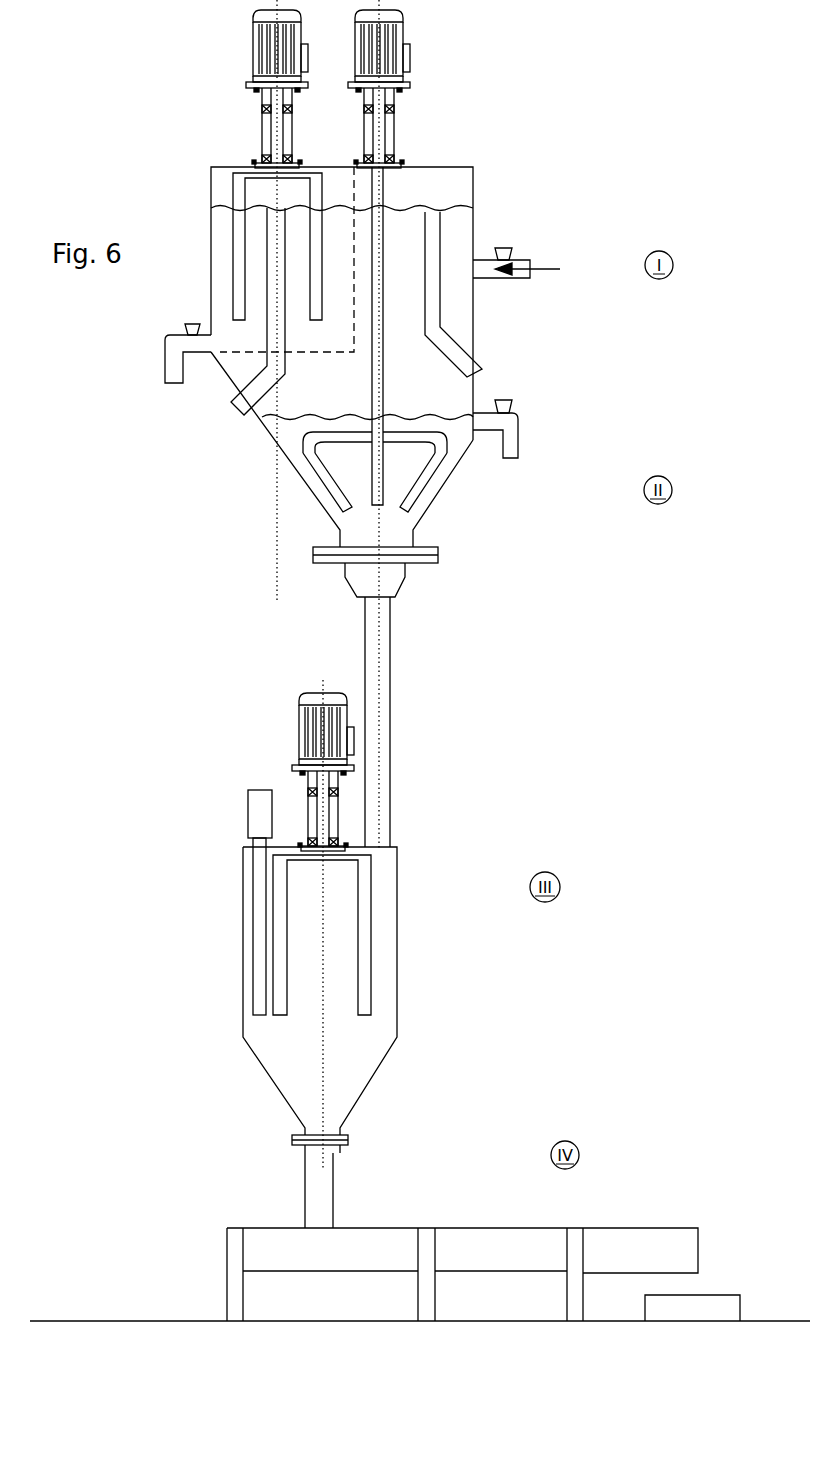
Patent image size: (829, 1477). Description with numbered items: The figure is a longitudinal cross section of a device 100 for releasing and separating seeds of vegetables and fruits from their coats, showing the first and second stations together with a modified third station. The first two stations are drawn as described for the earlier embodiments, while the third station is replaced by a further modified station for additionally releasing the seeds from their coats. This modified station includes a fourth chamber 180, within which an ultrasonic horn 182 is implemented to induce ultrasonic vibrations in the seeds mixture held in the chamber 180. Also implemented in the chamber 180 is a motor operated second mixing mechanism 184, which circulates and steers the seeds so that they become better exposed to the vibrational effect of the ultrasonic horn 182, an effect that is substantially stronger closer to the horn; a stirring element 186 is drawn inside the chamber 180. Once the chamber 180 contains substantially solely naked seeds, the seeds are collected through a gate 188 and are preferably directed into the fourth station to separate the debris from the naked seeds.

The device 100 is at (610, 186).
The fourth chamber 180 is at (388, 958).
The ultrasonic horn 182 is at (262, 893).
The motor operated second mixing mechanism 184 is at (300, 727).
The stirrer baffle 186 is at (365, 893).
The gate 188 is at (348, 1141).